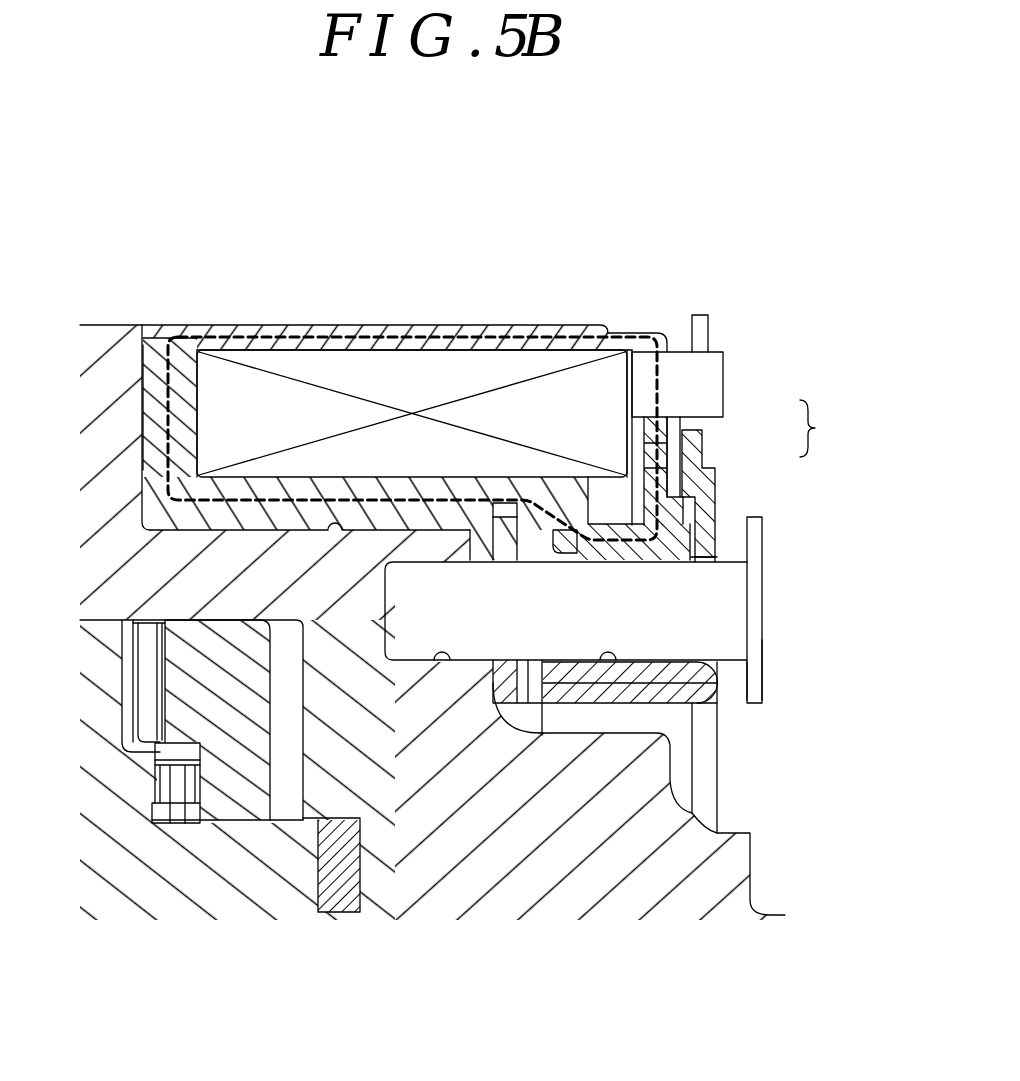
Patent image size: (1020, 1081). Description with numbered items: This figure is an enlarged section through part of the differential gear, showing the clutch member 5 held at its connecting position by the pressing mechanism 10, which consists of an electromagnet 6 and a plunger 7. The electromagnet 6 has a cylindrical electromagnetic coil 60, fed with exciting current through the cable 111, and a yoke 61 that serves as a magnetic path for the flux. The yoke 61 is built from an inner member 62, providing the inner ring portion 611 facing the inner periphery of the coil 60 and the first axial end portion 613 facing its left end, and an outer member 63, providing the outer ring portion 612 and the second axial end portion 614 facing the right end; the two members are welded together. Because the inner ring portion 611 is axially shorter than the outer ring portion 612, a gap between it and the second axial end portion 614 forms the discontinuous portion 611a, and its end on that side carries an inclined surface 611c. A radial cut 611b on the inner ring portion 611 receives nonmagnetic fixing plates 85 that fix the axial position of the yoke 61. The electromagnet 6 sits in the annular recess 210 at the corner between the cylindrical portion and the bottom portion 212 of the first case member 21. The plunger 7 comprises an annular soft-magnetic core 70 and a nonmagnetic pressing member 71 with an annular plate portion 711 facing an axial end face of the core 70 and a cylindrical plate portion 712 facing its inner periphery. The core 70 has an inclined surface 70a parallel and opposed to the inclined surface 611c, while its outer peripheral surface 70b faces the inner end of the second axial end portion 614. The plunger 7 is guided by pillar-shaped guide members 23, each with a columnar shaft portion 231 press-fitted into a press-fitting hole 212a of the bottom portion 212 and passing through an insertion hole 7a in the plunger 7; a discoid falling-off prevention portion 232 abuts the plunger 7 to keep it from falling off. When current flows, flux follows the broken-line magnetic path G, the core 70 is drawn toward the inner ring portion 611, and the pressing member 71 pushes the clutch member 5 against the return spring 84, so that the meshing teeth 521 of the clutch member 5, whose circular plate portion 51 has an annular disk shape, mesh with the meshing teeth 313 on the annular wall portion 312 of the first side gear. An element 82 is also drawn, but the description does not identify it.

The first case member 21 is at (105, 325).
The inner member 62 is at (157, 335).
The first axial end portion 613 is at (178, 360).
The inner ring portion 611 is at (250, 493).
The outer ring portion 612 is at (307, 338).
The electromagnetic coil 60 is at (363, 365).
The electromagnet 6 is at (531, 306).
The discontinuous portion 611a is at (585, 470).
The yoke 61 is at (540, 337).
The magnetic path G is at (583, 337).
The outer member 63 is at (634, 337).
The inclined surface 611c is at (578, 550).
The cable 111 is at (708, 334).
The second axial end portion 614 is at (668, 415).
The outer peripheral surface 70b is at (684, 482).
The pressing member 71 is at (704, 473).
The magnetic material core 70 is at (699, 500).
The plunger 7 is at (817, 428).
The annular plate portion 711 is at (711, 523).
The guide member 23 is at (763, 567).
The shaft portion 231 is at (723, 598).
The falling-off prevention portion 232 is at (756, 673).
The pressing mechanism 10 is at (781, 664).
The inclined surface 70a is at (578, 562).
The cylindrical plate portion 712 is at (690, 706).
The bottom portion 212 is at (620, 762).
The cut 611b is at (560, 530).
The annular wall portion 312 is at (122, 628).
The meshing teeth 313 is at (126, 623).
The meshing teeth 521 is at (145, 628).
The circular plate portion 51 is at (228, 633).
The annular recess 210 is at (337, 525).
The press-fitting hole 212a is at (433, 663).
The fixing plate 85 is at (505, 693).
The insertion hole 7a is at (607, 650).
The return spring 84 is at (180, 786).
The clutch member 5 is at (238, 823).
The bearing holder 82 is at (338, 880).